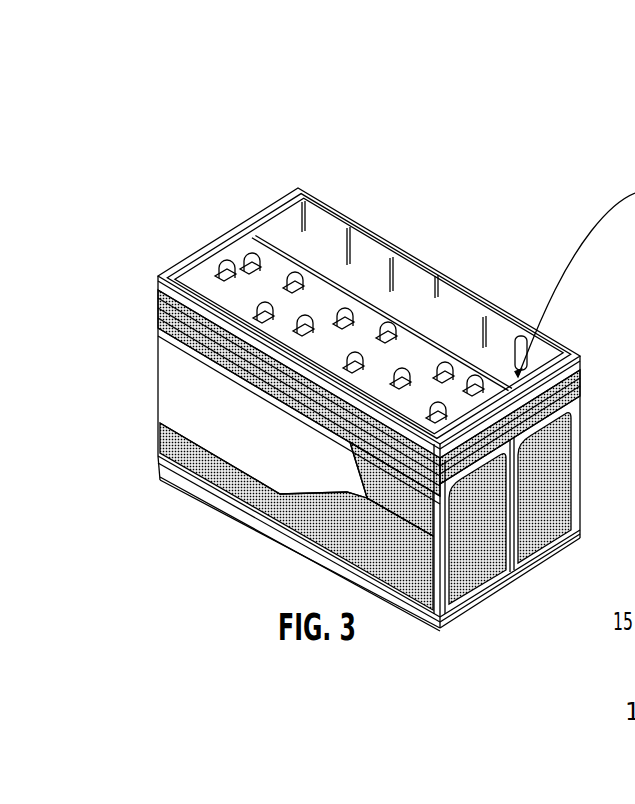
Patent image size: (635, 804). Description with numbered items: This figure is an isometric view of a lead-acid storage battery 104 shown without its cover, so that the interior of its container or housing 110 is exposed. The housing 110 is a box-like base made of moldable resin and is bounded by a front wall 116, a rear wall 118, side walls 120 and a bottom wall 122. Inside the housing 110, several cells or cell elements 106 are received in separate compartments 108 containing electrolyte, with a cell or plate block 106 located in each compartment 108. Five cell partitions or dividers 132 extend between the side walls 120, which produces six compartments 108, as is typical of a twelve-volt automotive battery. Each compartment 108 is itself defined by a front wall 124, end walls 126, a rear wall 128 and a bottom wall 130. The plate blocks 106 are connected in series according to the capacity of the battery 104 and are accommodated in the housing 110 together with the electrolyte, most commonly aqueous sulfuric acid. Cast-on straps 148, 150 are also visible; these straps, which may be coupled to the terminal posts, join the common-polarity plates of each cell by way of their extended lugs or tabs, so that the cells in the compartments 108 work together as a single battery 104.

The lead-acid storage battery 104 is at (150, 107).
The cell element 106 is at (503, 378).
The compartment 108 is at (377, 284).
The container 110 is at (160, 393).
The front wall 116 is at (267, 537).
The rear wall 118 is at (580, 442).
The side wall 120 is at (158, 350).
The bottom wall 122 is at (215, 506).
The front wall 124 is at (436, 330).
The end wall 126 is at (456, 308).
The rear wall 128 is at (415, 305).
The bottom wall 130 is at (275, 552).
The cell partition 132 is at (288, 373).
The cast-on strap 148 is at (192, 288).
The cast-on strap 150 is at (480, 558).